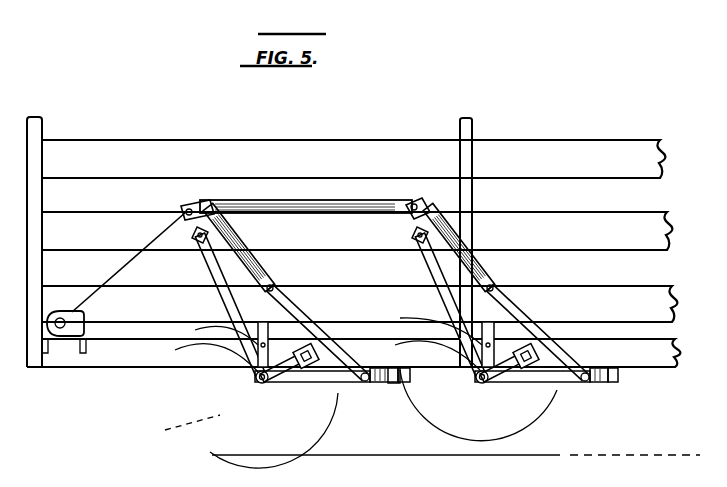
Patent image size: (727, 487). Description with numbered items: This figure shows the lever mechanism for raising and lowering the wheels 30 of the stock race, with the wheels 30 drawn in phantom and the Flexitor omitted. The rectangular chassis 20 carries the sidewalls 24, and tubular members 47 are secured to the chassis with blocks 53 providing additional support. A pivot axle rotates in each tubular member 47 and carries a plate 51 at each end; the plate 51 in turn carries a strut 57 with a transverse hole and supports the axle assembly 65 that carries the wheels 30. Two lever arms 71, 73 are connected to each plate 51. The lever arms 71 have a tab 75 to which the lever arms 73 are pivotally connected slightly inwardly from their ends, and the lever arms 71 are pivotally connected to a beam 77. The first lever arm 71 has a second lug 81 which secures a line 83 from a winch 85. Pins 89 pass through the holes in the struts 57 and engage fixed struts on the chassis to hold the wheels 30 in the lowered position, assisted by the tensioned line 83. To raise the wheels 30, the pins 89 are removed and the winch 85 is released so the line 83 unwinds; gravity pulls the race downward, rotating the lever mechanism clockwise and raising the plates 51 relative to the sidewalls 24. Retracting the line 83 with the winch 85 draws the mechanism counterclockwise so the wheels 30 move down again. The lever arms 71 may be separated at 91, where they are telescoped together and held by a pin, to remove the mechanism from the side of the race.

The rectangular chassis 20 is at (120, 351).
The sidewalls 24 is at (112, 146).
The wheels 30 is at (428, 420).
The tubular members 47 is at (370, 385).
The plate 51 is at (345, 385).
The blocks 53 is at (394, 384).
The strut 57 is at (186, 370).
The axle assembly 65 is at (300, 384).
The lever arms 71 is at (310, 318).
The lever arms 73 is at (200, 262).
The tab 75 is at (194, 234).
The beam 77 is at (333, 201).
The second lug 81 is at (182, 206).
The line 83 is at (118, 272).
The winch 85 is at (71, 337).
The pins 89 is at (189, 348).
The telescoped joint 91 is at (300, 314).